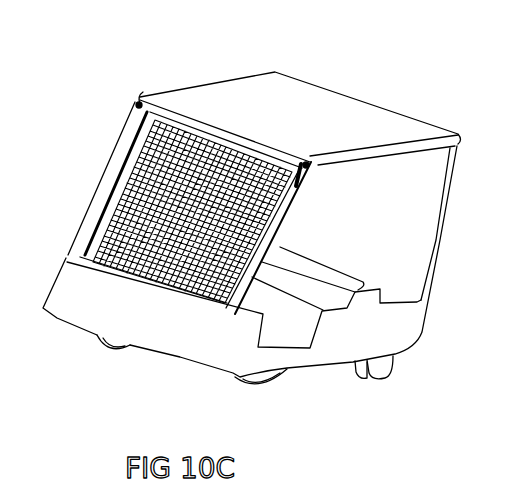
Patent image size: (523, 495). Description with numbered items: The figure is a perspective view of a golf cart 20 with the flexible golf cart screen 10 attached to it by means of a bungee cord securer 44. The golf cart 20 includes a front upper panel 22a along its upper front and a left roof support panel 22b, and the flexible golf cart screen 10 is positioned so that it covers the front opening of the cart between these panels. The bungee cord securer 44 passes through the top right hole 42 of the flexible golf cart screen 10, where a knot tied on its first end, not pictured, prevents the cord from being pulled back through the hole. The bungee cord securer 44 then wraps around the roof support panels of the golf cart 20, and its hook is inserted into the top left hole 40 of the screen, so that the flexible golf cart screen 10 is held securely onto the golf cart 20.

The golf cart 20 is at (398, 94).
The flexible golf cart screen 10 is at (120, 192).
The front upper panel 22a is at (112, 155).
The left roof support panel 22b is at (287, 224).
The top left hole 40 is at (137, 110).
The top right hole 42 is at (298, 180).
The bungee cord securer 44 is at (312, 167).